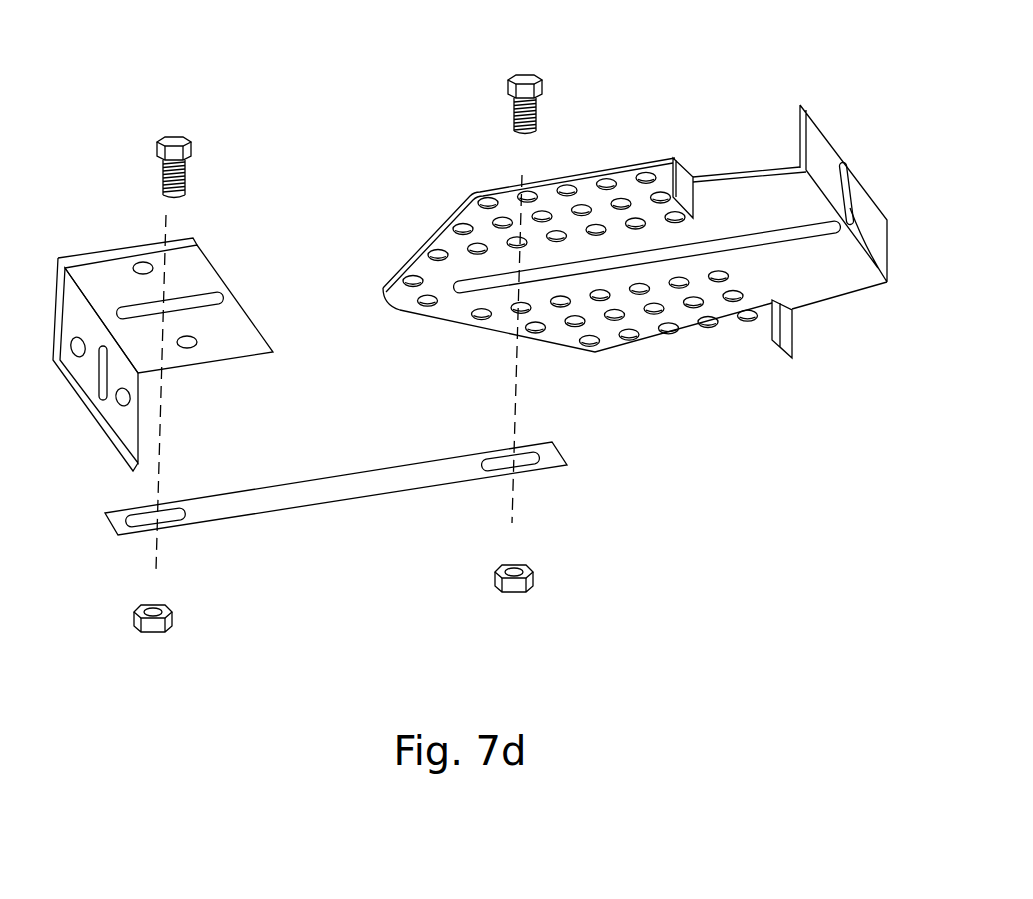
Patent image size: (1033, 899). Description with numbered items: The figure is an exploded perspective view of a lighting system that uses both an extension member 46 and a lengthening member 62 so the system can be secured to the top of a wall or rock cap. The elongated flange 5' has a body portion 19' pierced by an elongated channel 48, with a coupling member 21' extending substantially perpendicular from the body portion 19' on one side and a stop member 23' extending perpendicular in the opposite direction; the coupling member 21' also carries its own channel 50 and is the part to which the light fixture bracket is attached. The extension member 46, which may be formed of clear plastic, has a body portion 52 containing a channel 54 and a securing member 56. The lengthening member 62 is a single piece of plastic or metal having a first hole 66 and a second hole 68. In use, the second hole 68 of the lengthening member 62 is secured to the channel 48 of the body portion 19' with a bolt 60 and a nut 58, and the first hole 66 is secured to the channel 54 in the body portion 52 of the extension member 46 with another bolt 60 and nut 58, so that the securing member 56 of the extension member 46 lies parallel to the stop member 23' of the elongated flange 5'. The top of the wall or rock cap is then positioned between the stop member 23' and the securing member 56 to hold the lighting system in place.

The elongated flange 5' is at (620, 221).
The body portion 19' is at (580, 301).
The coupling member 21' is at (843, 146).
The stop member 23' is at (717, 148).
The extension member 46 is at (202, 330).
The elongated channel 48 is at (767, 240).
The channel 50 is at (883, 282).
The body portion 52 is at (213, 309).
The channel 54 is at (185, 307).
The securing member 56 is at (112, 412).
The nut 58 is at (533, 577).
The bolt 60 is at (553, 72).
The lengthening member 62 is at (369, 539).
The first hole 66 is at (117, 532).
The second hole 68 is at (562, 452).